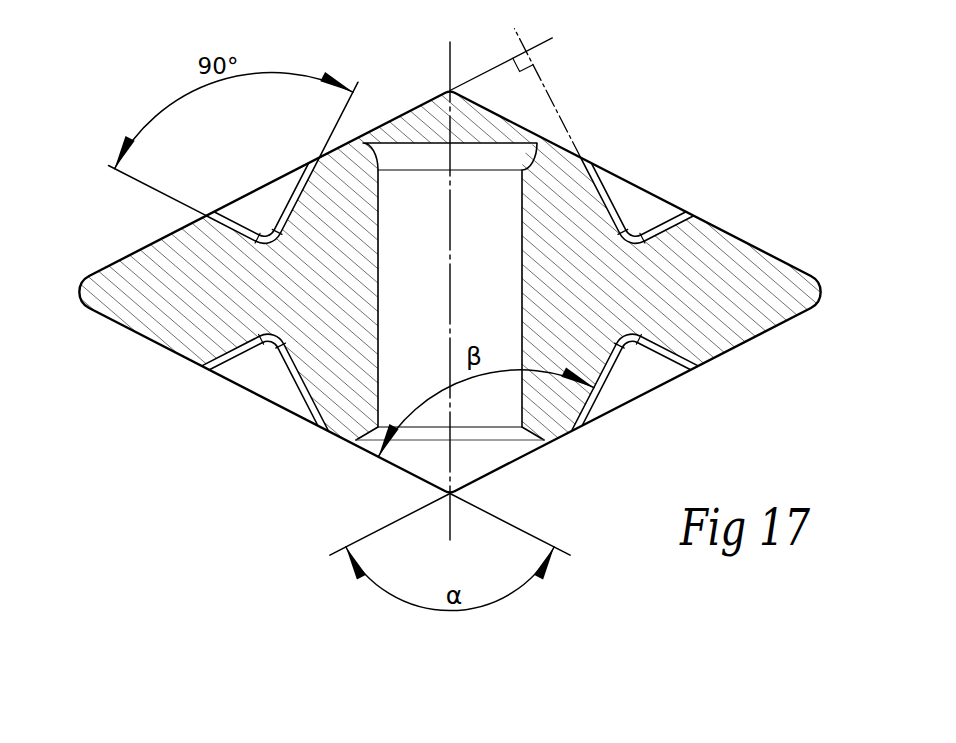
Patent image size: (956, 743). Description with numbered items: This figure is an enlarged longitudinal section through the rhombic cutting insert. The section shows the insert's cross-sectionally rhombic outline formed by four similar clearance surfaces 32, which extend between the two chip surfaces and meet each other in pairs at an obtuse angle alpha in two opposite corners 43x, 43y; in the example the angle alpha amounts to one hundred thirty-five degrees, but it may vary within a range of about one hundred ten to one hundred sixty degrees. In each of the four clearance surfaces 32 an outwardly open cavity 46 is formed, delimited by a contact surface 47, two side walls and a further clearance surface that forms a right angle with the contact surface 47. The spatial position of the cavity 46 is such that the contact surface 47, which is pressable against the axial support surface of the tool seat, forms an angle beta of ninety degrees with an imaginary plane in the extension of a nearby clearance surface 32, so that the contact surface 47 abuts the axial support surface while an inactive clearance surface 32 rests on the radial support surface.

The clearance surface 32 is at (131, 255).
The cavity 46 is at (660, 166).
The contact surface 47 is at (304, 191).
The corner 43x is at (450, 91).
The corner 43y is at (451, 493).